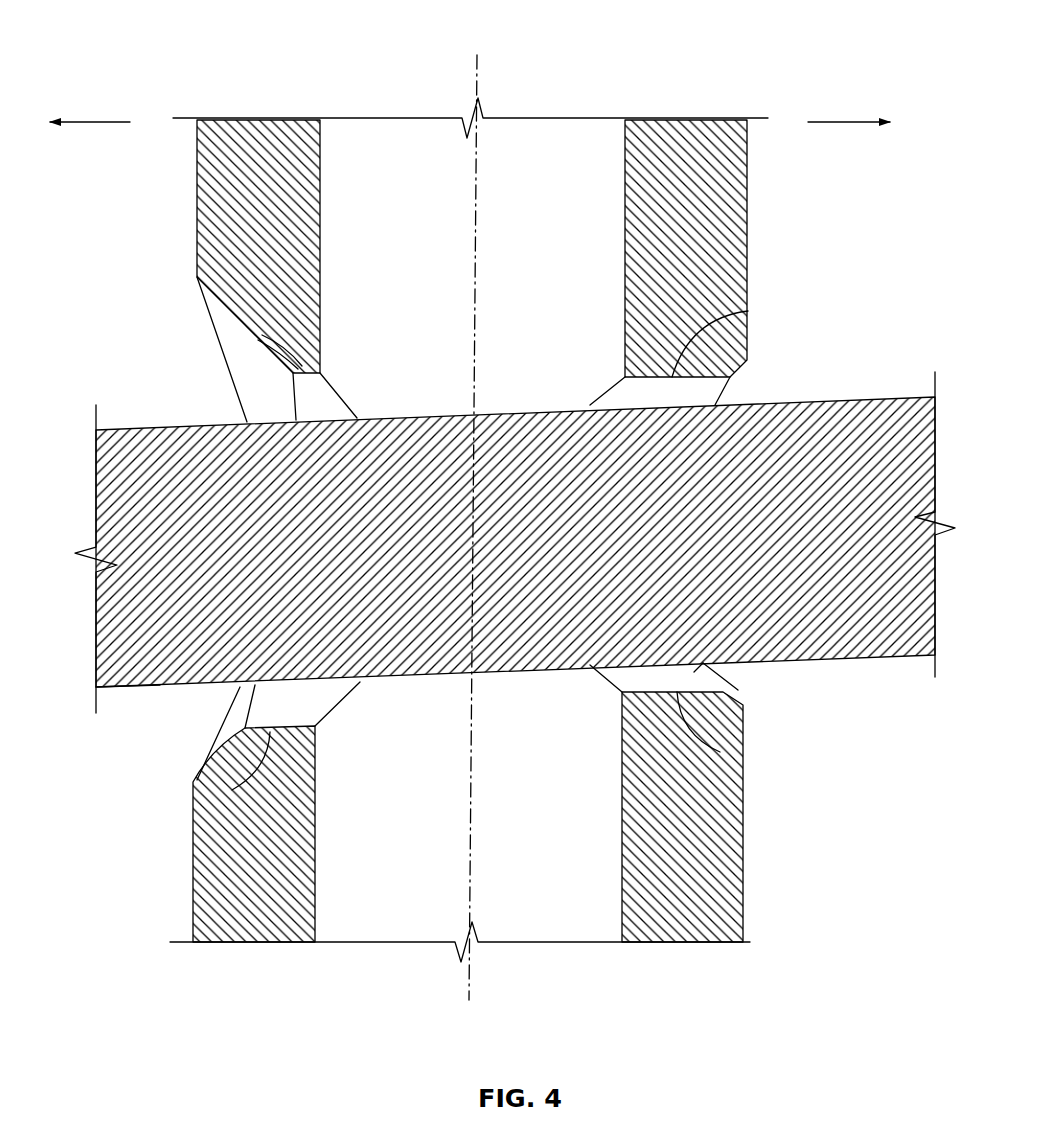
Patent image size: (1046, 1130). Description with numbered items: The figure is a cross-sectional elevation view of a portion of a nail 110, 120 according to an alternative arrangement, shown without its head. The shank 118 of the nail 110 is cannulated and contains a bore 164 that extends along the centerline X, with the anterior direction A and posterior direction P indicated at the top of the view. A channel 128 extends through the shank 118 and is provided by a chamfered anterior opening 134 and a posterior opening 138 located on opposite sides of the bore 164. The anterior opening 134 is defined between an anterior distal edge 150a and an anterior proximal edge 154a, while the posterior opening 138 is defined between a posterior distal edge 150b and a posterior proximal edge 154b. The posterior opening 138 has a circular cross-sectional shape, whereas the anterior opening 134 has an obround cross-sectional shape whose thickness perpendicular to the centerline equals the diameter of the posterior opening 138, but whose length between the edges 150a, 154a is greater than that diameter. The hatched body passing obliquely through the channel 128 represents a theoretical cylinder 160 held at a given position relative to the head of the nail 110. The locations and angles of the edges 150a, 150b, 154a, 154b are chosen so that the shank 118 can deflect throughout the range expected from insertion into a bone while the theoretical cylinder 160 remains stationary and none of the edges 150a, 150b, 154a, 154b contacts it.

The nail 110 is at (770, 46).
The housing assembly 120 is at (513, 531).
The shank 118 is at (748, 265).
The channel 128 is at (186, 398).
The anterior opening 134 is at (203, 762).
The posterior opening 138 is at (694, 672).
The anterior distal edge 150a is at (290, 358).
The posterior distal edge 150b is at (748, 311).
The anterior proximal edge 154a is at (270, 732).
The posterior proximal edge 154b is at (677, 692).
The theoretical cylinder 160 is at (160, 690).
The bore 164 is at (563, 782).